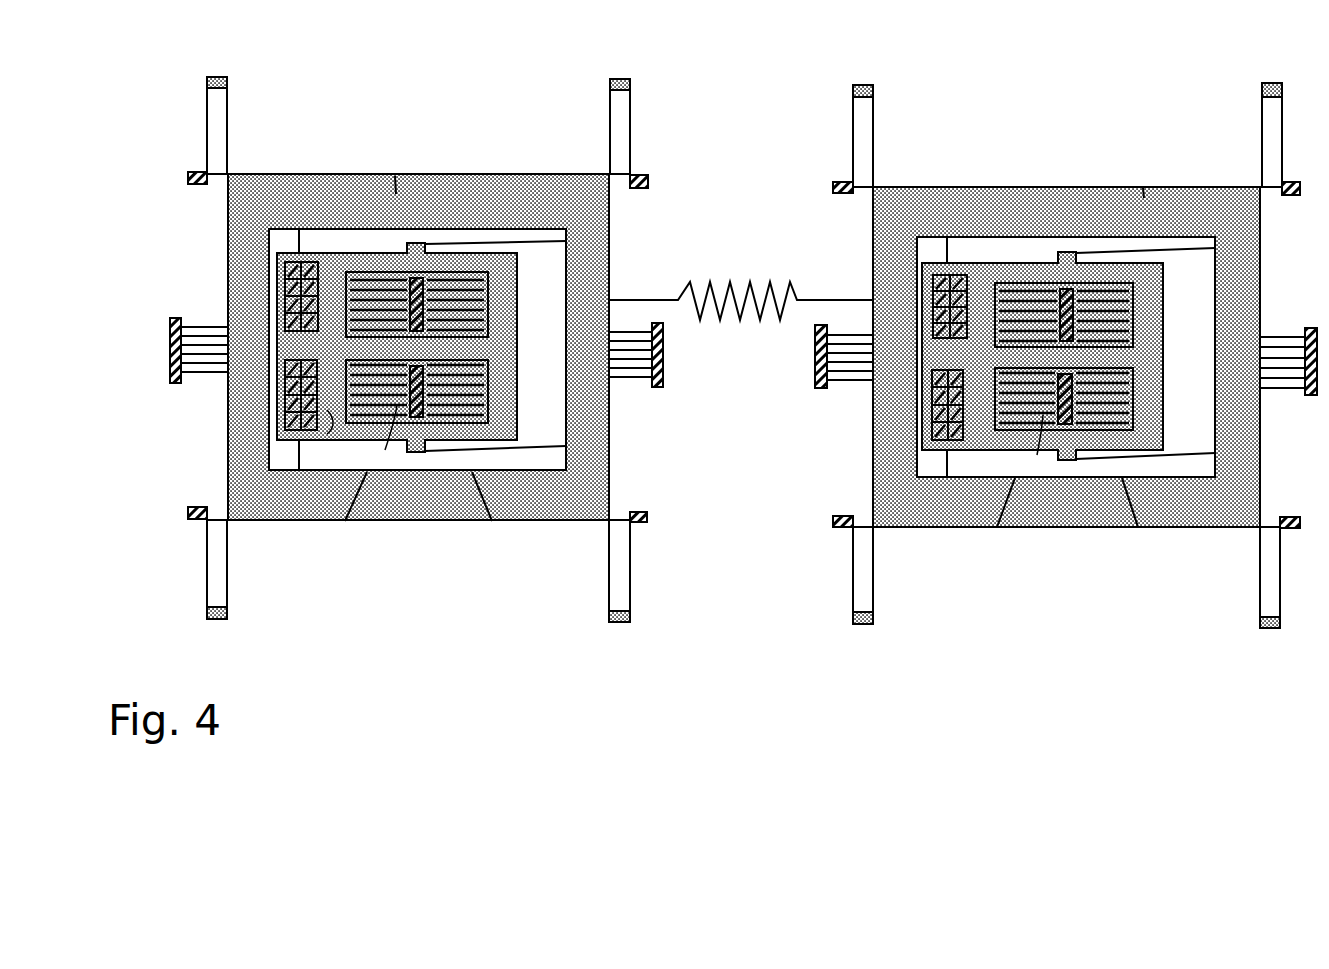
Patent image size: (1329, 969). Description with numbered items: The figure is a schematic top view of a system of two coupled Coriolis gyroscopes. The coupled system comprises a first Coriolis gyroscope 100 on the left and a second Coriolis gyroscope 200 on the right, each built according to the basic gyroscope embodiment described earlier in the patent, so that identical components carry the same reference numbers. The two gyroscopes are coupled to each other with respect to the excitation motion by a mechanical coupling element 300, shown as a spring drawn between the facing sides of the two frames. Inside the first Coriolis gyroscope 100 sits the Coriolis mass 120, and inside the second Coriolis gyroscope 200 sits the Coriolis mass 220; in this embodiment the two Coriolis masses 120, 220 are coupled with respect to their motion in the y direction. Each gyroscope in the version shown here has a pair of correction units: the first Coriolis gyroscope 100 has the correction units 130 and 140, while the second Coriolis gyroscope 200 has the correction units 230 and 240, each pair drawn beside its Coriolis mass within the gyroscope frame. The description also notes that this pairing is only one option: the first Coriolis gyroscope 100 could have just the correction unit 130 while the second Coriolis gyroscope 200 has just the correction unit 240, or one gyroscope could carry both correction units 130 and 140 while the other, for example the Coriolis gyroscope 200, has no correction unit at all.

The Coriolis gyroscope 100 is at (498, 34).
The Coriolis mass 120 is at (313, 440).
The correction unit 130 is at (296, 272).
The correction unit 140 is at (293, 407).
The Coriolis gyroscope 200 is at (1147, 40).
The Coriolis mass 220 is at (978, 300).
The correction unit 230 is at (940, 277).
The correction unit 240 is at (933, 418).
The mechanical coupling element 300 is at (728, 322).